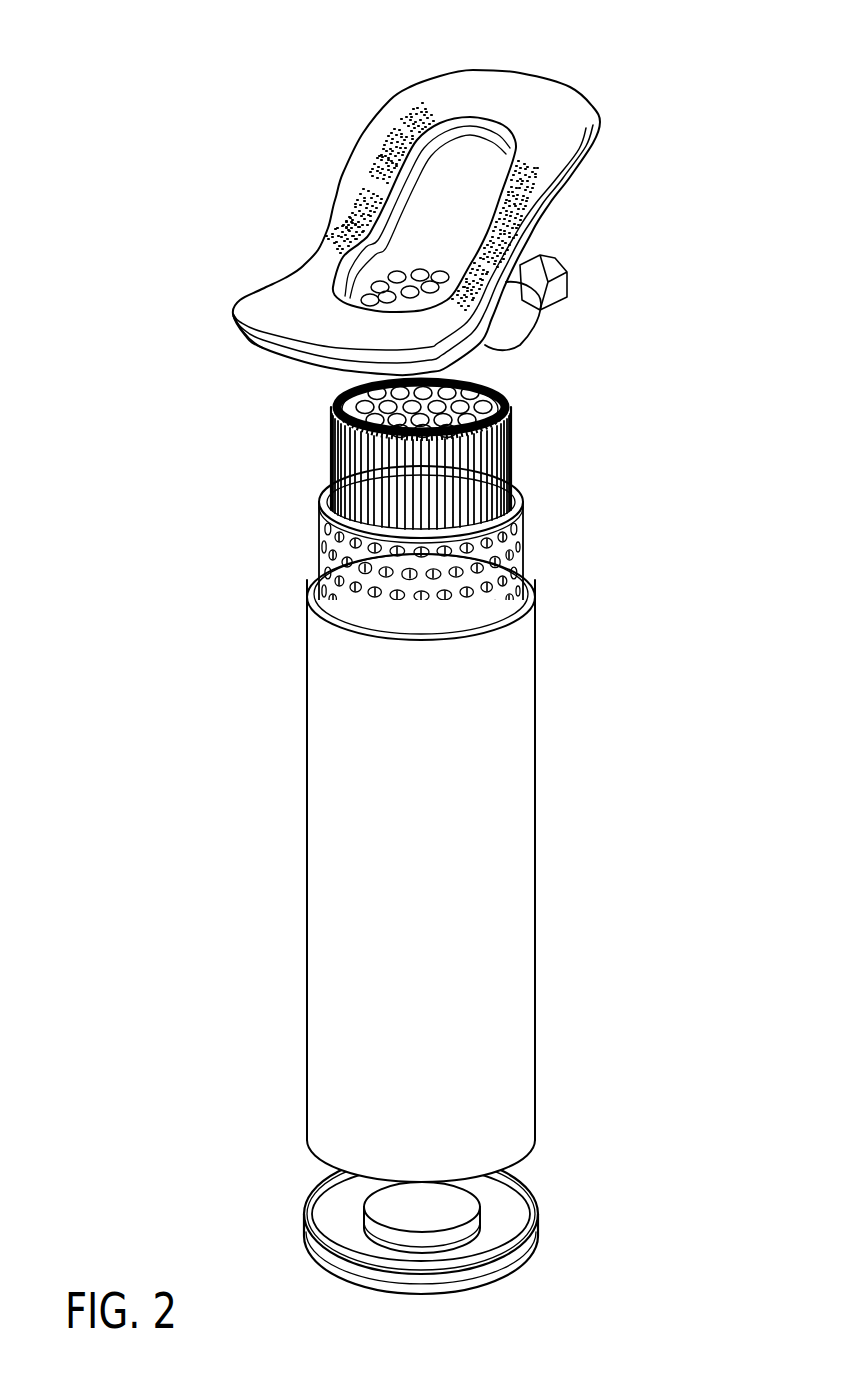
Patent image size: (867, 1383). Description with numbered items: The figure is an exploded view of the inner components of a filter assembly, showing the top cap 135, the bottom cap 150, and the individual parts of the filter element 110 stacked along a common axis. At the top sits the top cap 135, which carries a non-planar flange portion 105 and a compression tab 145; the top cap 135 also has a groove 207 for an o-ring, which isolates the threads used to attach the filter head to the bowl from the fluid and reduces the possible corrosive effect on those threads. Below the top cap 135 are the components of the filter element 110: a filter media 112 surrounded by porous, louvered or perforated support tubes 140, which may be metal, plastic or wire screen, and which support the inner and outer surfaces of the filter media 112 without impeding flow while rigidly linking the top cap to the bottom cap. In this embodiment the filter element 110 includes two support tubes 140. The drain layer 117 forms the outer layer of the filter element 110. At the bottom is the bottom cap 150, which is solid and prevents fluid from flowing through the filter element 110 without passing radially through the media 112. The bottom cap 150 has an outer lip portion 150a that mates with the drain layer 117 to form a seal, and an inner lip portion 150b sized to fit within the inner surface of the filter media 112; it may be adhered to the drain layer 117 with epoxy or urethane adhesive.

The non-planar flange portion 105 is at (533, 103).
The top cap 135 is at (607, 90).
The compression tab 145 is at (550, 287).
The groove 207 is at (237, 340).
The filter element 110 is at (283, 392).
The support tubes 140 is at (513, 462).
The filter media 112 is at (470, 530).
The drain layer 117 is at (320, 872).
The bottom cap 150 is at (542, 1211).
The outer lip portion 150a is at (528, 1257).
The inner lip portion 150b is at (443, 1243).